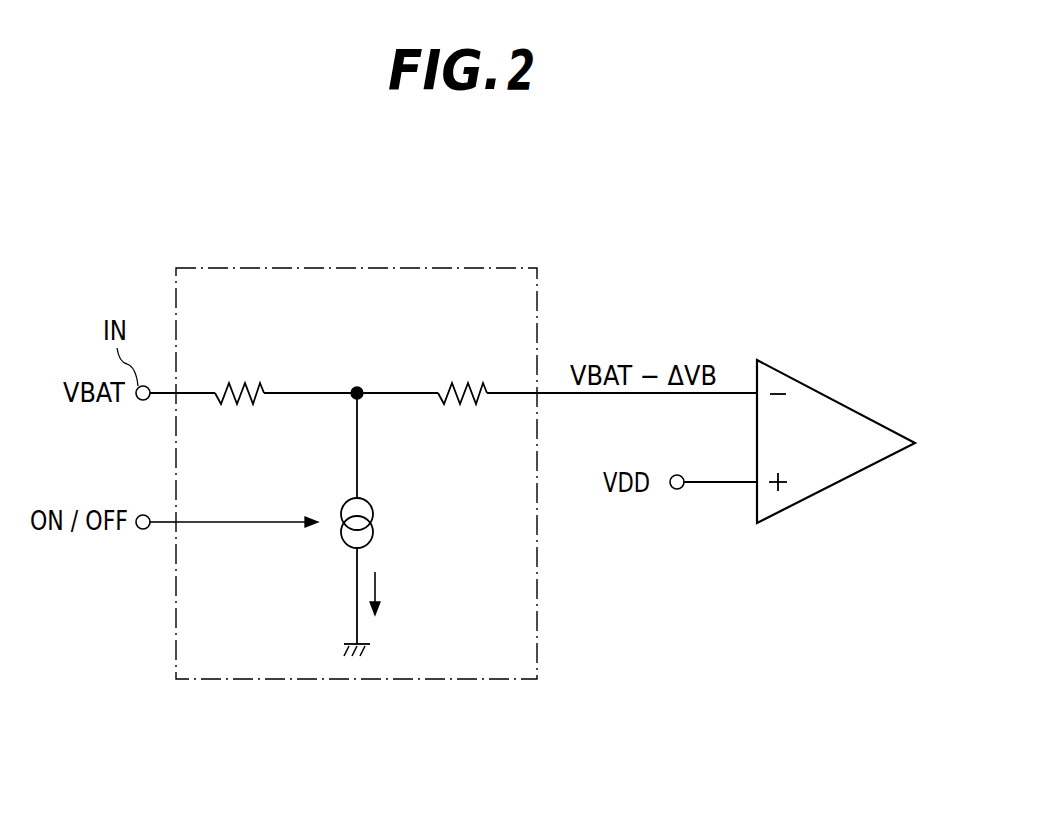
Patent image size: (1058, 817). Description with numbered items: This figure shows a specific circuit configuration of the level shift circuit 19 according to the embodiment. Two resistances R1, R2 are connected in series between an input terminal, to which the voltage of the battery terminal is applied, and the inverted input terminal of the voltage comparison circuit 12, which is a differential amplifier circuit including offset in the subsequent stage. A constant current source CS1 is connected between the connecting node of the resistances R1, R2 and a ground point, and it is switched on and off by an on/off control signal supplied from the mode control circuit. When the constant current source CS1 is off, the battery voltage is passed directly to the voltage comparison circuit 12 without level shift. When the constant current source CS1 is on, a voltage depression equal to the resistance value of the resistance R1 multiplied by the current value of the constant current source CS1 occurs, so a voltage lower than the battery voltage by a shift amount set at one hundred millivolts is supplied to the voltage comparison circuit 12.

The level shift circuit 19 is at (376, 266).
The voltage comparison circuit 12 is at (823, 392).
The resistance R1 is at (239, 396).
The resistance R2 is at (462, 376).
The constant current source CS1 is at (382, 523).